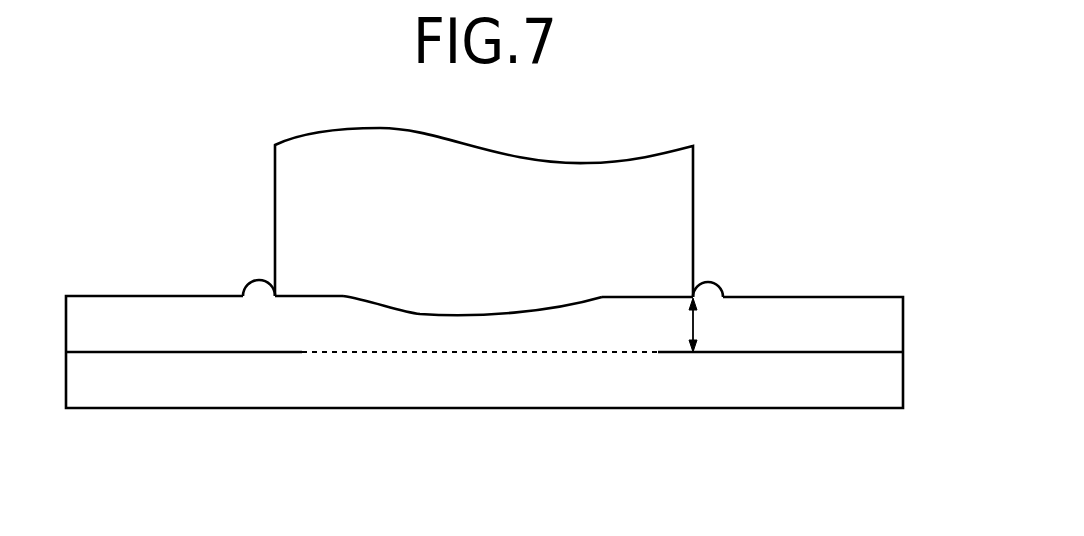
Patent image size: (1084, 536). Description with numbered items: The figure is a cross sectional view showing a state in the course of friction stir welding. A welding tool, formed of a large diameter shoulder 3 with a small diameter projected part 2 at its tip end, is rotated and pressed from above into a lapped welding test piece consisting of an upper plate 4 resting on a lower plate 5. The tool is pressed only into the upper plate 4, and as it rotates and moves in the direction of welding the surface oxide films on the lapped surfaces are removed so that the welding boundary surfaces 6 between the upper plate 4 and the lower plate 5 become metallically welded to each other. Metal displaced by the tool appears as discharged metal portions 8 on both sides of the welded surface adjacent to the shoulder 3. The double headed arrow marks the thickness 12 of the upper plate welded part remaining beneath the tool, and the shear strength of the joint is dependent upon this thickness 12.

The projected part 2 is at (417, 313).
The shoulder 3 is at (693, 188).
The upper plate 4 is at (99, 295).
The lower plate 5 is at (95, 408).
The welding boundary surfaces 6 is at (408, 352).
The discharged metal portions 8 is at (250, 283).
The thickness of upper plate welded part 12 is at (688, 326).